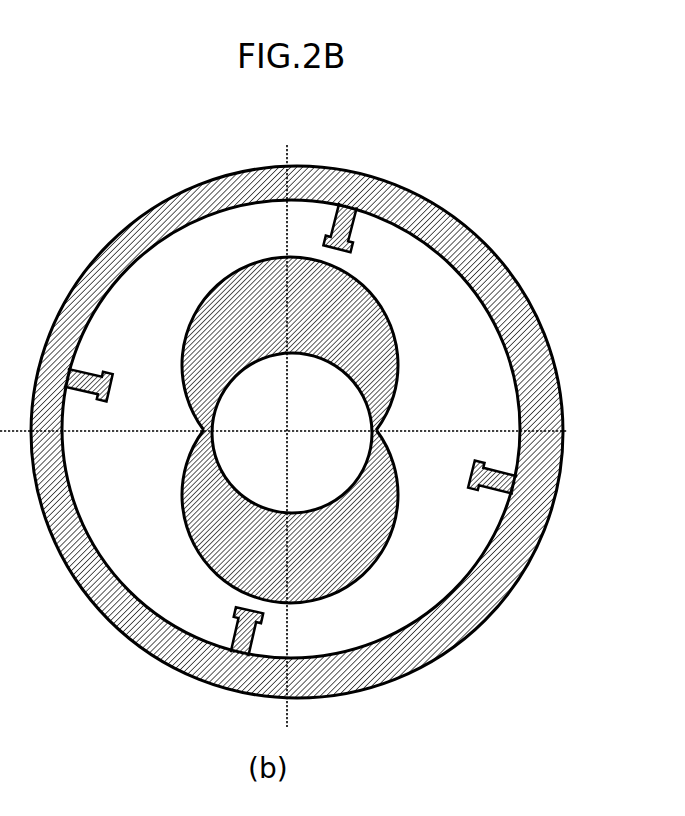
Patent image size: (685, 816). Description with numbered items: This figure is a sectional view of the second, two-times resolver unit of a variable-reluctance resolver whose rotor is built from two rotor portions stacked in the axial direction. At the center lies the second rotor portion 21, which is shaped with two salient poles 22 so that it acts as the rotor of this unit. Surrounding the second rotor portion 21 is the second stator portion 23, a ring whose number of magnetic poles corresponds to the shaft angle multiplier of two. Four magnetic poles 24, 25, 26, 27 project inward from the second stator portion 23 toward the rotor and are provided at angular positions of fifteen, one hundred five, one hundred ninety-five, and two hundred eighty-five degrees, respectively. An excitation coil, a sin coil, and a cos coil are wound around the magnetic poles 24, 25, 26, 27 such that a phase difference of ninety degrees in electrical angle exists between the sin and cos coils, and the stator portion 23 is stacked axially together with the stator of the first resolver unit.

The second rotor portion 21 is at (407, 380).
The salient poles 22 is at (390, 308).
The second stator portion 23 is at (568, 206).
The magnetic pole 24 is at (352, 236).
The magnetic pole 25 is at (502, 493).
The magnetic pole 26 is at (238, 637).
The magnetic pole 27 is at (92, 365).